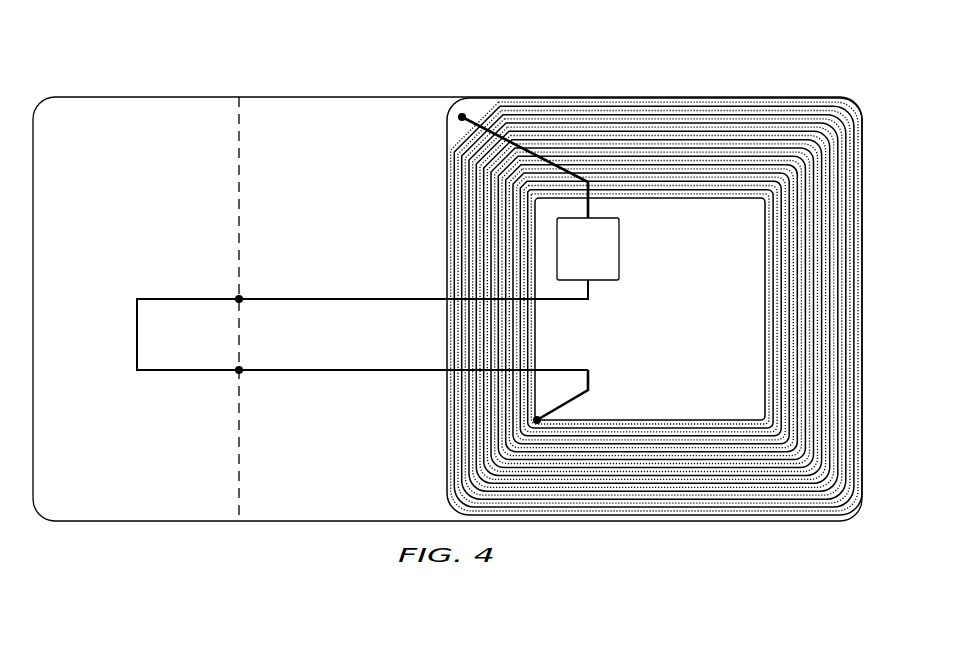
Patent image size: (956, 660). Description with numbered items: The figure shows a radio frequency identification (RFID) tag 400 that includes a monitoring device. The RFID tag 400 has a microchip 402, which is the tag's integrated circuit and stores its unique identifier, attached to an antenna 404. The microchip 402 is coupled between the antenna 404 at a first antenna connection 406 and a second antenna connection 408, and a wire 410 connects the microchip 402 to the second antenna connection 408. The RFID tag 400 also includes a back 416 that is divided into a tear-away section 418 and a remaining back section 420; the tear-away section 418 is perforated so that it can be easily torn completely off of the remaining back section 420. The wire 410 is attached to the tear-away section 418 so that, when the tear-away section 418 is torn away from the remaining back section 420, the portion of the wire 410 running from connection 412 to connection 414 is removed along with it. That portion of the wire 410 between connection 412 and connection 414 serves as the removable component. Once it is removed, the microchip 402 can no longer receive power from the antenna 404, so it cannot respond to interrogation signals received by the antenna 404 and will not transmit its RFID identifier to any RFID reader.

The radio frequency identification (RFID) tag 400 is at (193, 77).
The microchip 402 is at (607, 260).
The antenna 404 is at (448, 232).
The first antenna connection 406 is at (456, 120).
The second antenna connection 408 is at (545, 397).
The wire 410 is at (184, 297).
The connection 412 is at (243, 295).
The connection 414 is at (243, 375).
The back 416 is at (239, 530).
The tear-away section 418 is at (152, 458).
The remaining back section 420 is at (365, 458).